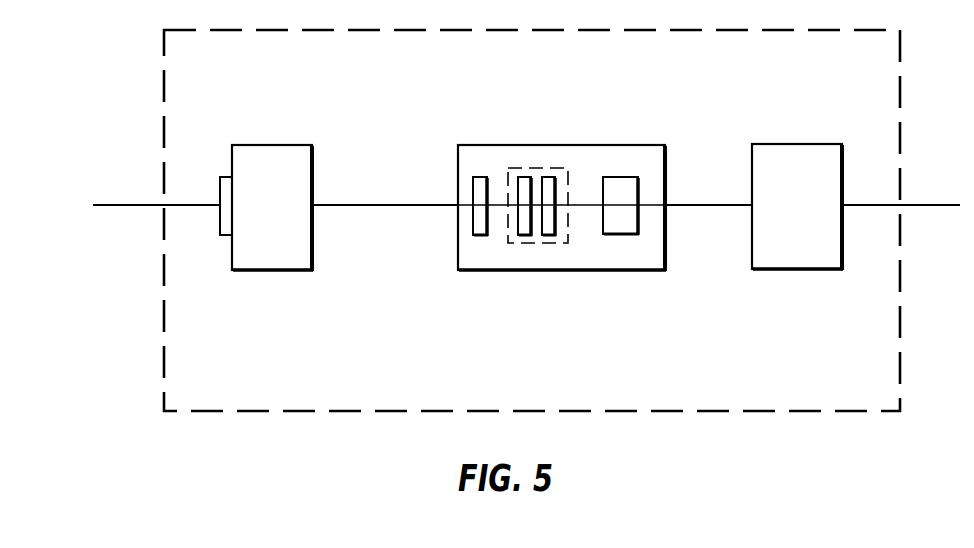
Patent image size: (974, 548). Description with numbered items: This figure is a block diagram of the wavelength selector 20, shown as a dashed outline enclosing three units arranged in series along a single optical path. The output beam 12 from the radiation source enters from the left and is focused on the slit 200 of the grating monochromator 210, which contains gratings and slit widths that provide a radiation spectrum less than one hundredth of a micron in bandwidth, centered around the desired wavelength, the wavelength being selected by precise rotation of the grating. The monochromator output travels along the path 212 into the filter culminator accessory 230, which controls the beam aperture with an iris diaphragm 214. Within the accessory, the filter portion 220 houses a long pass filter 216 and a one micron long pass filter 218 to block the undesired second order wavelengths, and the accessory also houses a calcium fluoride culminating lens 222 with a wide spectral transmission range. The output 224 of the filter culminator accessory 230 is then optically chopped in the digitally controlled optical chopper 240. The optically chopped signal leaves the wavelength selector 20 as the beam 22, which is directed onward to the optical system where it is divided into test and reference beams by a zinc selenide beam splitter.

The output beam 12 is at (131, 205).
The wavelength selector 20 is at (481, 373).
The optically chopped beam 22 is at (930, 205).
The slit 200 is at (220, 226).
The grating monochromator 210 is at (284, 218).
The intermediate line 212 is at (361, 205).
The iris diaphragm 214 is at (480, 177).
The long pass filter 216 is at (520, 177).
The one micron long pass filter 218 is at (547, 177).
The filter portion 220 is at (551, 243).
The calcium fluoride culminating lens 222 is at (640, 220).
The output 224 is at (689, 205).
The filter culminator accessory 230 is at (637, 145).
The optical chopper 240 is at (811, 218).